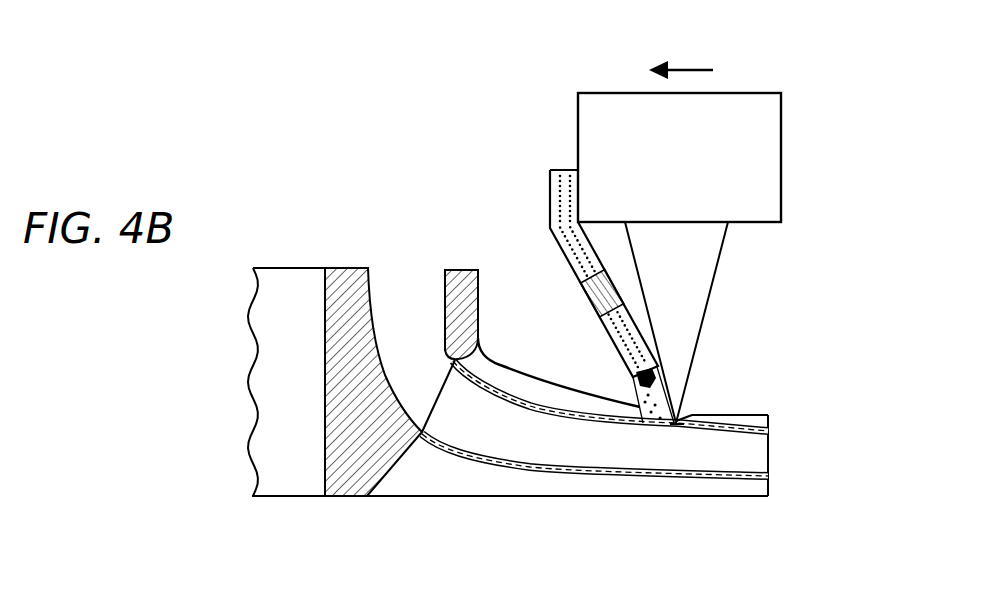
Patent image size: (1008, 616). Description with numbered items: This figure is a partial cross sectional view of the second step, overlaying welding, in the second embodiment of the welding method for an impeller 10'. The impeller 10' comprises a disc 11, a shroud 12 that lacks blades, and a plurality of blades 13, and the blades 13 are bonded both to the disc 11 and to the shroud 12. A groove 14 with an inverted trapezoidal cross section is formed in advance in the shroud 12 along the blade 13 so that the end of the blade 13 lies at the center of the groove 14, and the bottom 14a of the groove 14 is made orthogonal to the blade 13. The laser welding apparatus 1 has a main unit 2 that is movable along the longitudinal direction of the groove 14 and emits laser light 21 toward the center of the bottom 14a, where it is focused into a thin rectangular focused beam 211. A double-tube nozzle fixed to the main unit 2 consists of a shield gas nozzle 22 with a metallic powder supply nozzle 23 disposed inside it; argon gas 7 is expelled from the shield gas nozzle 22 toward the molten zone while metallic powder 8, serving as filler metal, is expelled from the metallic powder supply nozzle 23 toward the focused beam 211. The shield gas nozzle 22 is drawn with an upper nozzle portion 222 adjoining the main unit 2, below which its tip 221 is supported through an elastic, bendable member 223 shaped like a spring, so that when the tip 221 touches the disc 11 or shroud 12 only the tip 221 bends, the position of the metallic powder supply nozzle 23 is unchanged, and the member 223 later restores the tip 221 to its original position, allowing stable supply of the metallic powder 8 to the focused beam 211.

The laser welding apparatus 1 is at (585, 78).
The main unit 2 is at (578, 130).
The laser light 21 is at (700, 253).
The shield gas nozzle 22 is at (550, 190).
The tip 221 is at (620, 360).
The nozzle body portion 222 is at (565, 260).
The elastic, bendable member 223 is at (586, 298).
The metallic powder supply nozzle 23 is at (665, 357).
The argon gas 7 is at (680, 410).
The metallic powder 8 is at (633, 393).
The impeller 10' is at (536, 355).
The disc 11 is at (345, 267).
The shroud 12 is at (455, 267).
The blade 13 is at (430, 410).
The groove 14 is at (467, 482).
The bottom 14a is at (608, 427).
The focused beam 211 is at (680, 432).